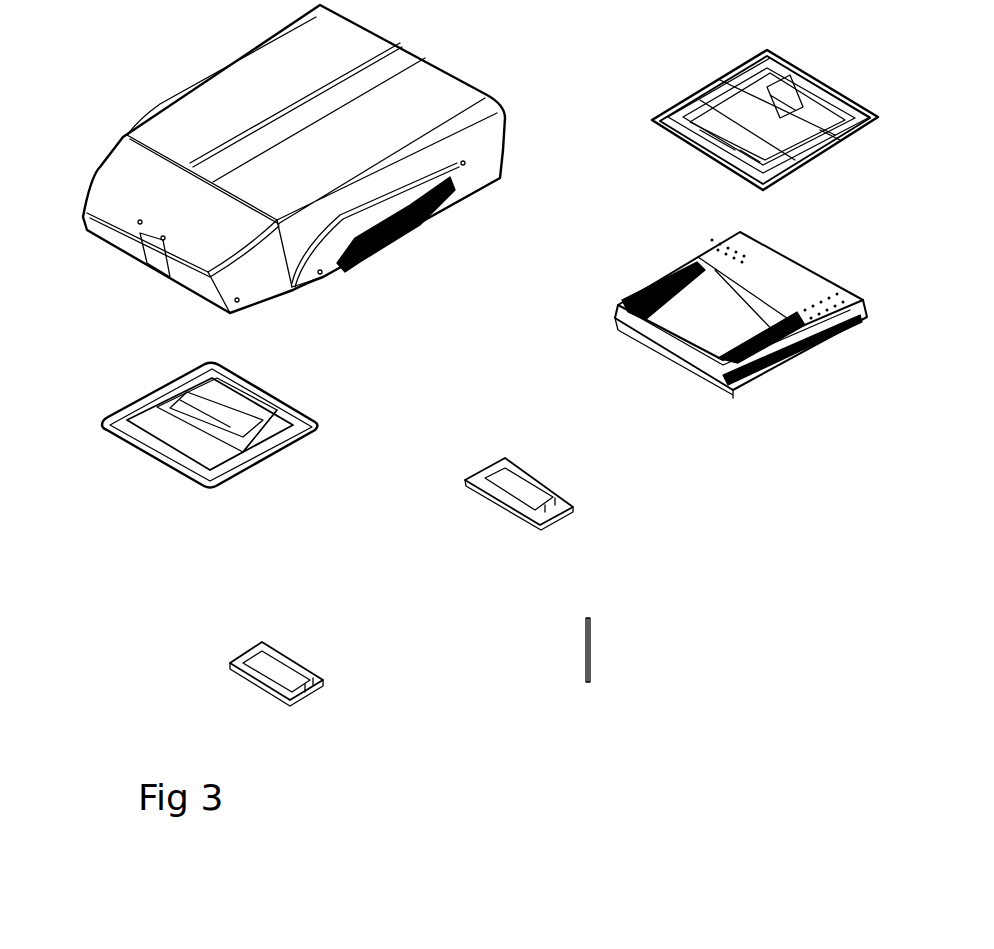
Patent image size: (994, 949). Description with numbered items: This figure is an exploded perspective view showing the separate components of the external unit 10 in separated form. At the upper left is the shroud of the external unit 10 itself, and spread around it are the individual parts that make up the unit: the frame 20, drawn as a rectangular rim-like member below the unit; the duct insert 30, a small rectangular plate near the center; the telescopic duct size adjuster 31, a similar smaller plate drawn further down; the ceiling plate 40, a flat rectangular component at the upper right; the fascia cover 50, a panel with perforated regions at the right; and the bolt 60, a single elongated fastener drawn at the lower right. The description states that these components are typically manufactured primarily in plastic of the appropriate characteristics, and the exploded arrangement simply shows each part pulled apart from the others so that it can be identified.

The external unit 10 is at (185, 120).
The frame 20 is at (163, 400).
The duct insert 30 is at (542, 478).
The telescopic duct size adjuster 31 is at (300, 660).
The ceiling plate 40 is at (803, 88).
The fascia cover 50 is at (785, 278).
The bolt 60 is at (592, 648).